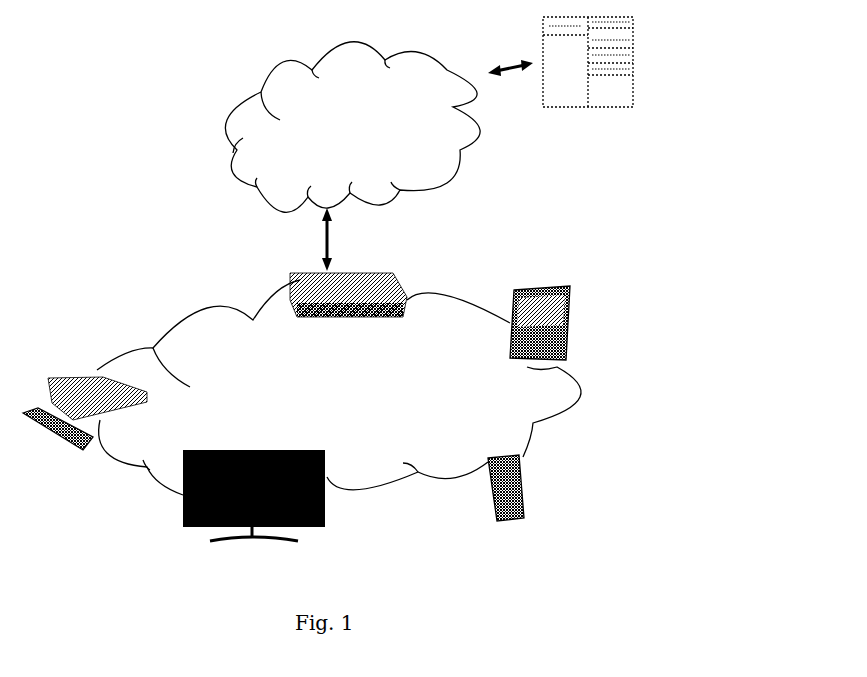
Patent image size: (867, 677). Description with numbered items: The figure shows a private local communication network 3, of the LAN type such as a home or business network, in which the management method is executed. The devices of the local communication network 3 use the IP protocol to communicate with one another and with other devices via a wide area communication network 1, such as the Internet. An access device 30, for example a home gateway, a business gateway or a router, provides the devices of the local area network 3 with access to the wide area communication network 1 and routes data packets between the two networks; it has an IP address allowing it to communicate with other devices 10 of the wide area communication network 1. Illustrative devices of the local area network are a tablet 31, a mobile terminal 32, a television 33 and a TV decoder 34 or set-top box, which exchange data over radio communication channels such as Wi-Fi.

The wide area communication network 1 is at (237, 173).
The devices of the wide area communication network 10 is at (633, 65).
The local communication network 3 is at (177, 320).
The access device 30 is at (373, 270).
The tablet 31 is at (567, 332).
The mobile terminal 32 is at (522, 470).
The television 33 is at (195, 448).
The TV decoder 34 is at (62, 378).